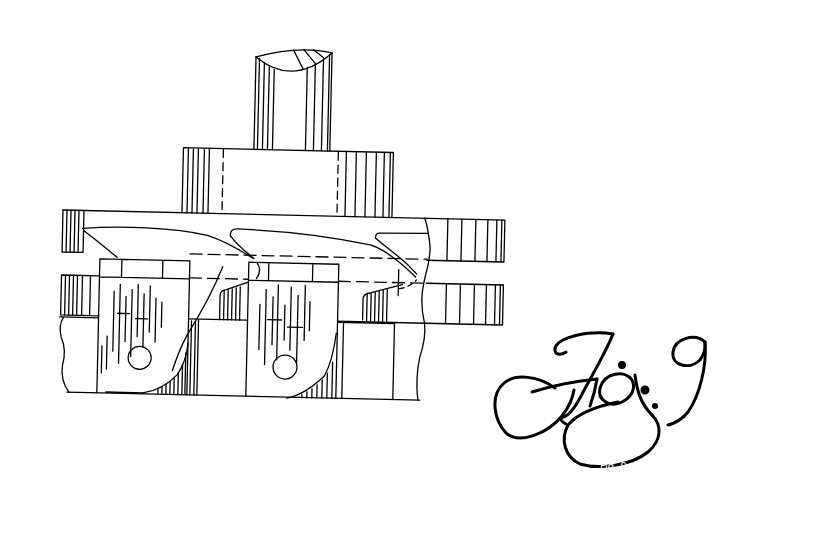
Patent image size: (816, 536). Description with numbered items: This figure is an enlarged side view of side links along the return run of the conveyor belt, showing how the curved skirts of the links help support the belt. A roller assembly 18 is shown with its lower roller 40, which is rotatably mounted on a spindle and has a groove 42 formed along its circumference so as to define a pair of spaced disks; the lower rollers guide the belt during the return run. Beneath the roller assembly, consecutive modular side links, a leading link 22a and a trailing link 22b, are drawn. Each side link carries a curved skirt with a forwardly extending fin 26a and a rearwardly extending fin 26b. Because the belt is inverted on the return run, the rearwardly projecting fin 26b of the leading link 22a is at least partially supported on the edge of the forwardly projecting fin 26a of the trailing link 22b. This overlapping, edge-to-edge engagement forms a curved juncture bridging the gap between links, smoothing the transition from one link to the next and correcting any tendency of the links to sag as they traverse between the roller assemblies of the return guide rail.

The roller assembly 18 is at (312, 100).
The lower roller 40 is at (210, 148).
The groove 42 is at (503, 275).
The rearwardly extending fin 26b is at (285, 250).
The forwardly extending fin 26a is at (168, 377).
The leading link 22a is at (340, 387).
The trailing link 22b is at (107, 377).